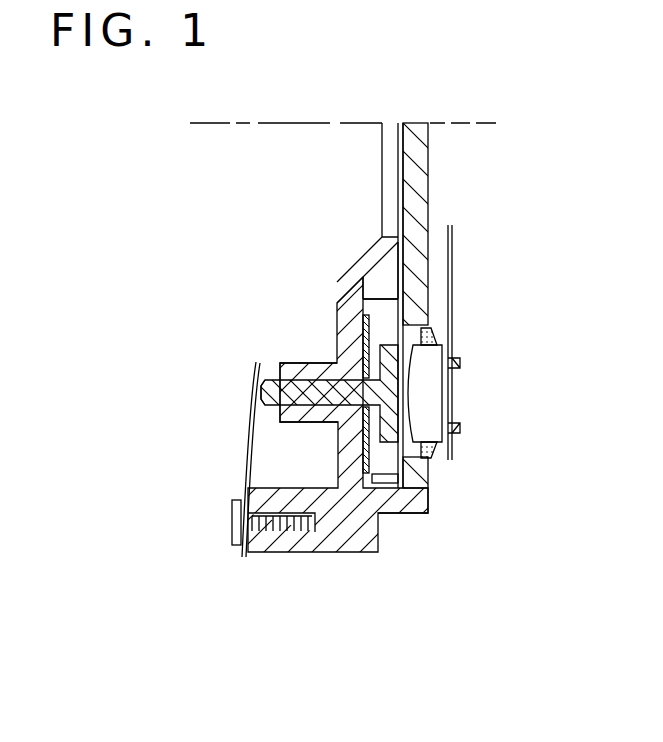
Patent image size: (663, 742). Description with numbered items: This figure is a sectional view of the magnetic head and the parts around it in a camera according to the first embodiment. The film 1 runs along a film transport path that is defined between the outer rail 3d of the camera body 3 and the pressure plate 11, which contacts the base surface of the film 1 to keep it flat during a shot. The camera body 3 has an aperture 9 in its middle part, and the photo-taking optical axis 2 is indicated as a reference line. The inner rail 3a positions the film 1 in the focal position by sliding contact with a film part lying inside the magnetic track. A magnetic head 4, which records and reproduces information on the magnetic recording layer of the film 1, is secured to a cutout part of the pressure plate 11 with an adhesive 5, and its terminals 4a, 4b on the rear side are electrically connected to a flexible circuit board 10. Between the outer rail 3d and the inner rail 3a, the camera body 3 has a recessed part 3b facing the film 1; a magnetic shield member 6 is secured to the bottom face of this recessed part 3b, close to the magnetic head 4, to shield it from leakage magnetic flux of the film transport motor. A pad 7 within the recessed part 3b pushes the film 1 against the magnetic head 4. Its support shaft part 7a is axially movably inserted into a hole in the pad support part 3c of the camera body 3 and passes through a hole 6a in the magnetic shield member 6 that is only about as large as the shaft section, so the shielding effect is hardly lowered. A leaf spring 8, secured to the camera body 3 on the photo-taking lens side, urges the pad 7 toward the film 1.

The film 1 is at (403, 190).
The photo-taking optical axis 2 is at (262, 125).
The camera body 3 is at (366, 263).
The inner rail 3a is at (388, 266).
The recessed part 3b is at (382, 309).
The pad support part 3c is at (312, 415).
The outer rail 3d is at (392, 502).
The magnetic head 4 is at (433, 409).
The terminal 4a is at (460, 431).
The terminal 4b is at (460, 364).
The adhesive 5 is at (436, 453).
The magnetic shield member 6 is at (362, 334).
The hole 6a is at (383, 456).
The pad 7 is at (382, 391).
The support shaft part 7a is at (262, 394).
The leaf spring 8 is at (242, 431).
The aperture 9 is at (392, 157).
The flexible circuit board 10 is at (453, 238).
The pressure plate 11 is at (418, 153).